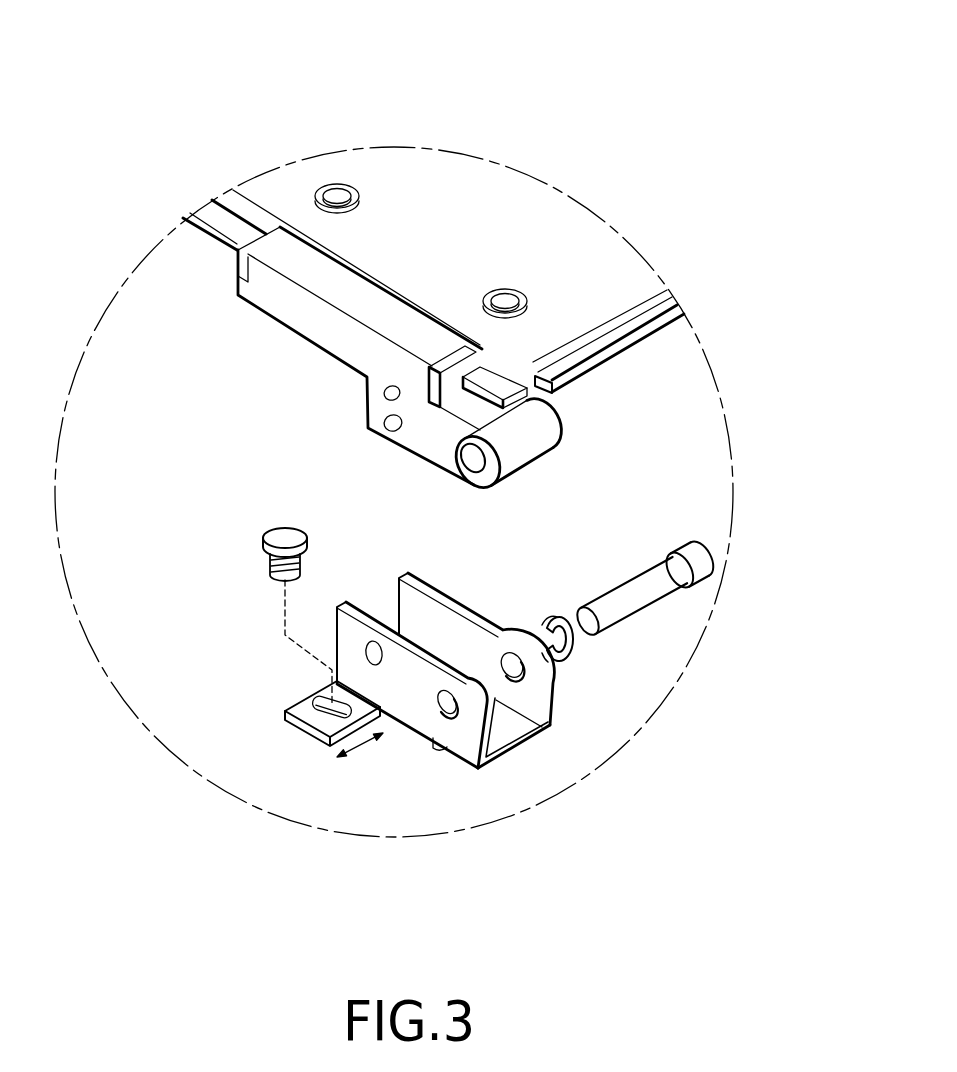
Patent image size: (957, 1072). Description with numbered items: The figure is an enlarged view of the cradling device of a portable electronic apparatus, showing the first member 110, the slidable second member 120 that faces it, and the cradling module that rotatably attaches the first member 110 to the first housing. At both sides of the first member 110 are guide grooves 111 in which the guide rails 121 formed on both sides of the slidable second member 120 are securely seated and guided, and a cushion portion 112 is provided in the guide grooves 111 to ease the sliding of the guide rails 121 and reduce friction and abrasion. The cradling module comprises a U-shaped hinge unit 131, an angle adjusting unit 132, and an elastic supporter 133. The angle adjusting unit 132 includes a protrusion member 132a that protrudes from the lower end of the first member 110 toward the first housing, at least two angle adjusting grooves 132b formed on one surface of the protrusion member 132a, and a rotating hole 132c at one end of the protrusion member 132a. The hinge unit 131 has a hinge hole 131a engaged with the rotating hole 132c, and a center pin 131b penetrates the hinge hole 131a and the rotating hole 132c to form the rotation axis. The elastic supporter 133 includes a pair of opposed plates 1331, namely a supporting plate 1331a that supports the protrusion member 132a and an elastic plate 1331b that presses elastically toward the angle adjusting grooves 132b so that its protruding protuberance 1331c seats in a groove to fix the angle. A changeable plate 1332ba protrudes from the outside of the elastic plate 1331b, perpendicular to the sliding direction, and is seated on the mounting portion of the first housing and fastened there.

The first member 110 is at (378, 308).
The guide grooves 111 is at (478, 374).
The cushion portion 112 is at (450, 388).
The slidable second member 120 is at (498, 200).
The guide rails 121 is at (208, 230).
The hinge unit 131 is at (648, 693).
The hinge hole 131a is at (602, 720).
The center pin 131b is at (627, 602).
The angle adjusting unit 132 is at (375, 366).
The protrusion member 132a is at (382, 426).
The angle adjusting groove 132b is at (385, 395).
The rotating hole 132c is at (467, 462).
The elastic supporter 133 is at (302, 663).
The plates 1331 is at (336, 648).
The supporting plate 1331a is at (398, 603).
The elastic plate 1331b is at (337, 637).
The protruding protuberance 1331c is at (370, 650).
The changeable plate 1332ba is at (300, 730).